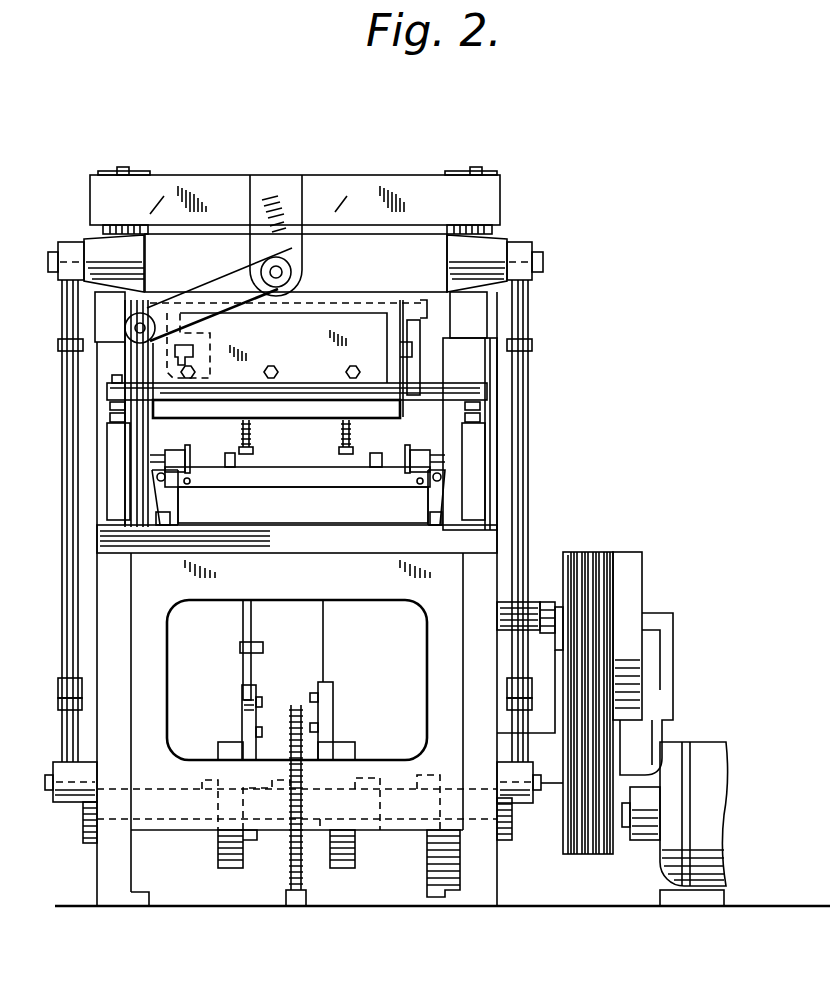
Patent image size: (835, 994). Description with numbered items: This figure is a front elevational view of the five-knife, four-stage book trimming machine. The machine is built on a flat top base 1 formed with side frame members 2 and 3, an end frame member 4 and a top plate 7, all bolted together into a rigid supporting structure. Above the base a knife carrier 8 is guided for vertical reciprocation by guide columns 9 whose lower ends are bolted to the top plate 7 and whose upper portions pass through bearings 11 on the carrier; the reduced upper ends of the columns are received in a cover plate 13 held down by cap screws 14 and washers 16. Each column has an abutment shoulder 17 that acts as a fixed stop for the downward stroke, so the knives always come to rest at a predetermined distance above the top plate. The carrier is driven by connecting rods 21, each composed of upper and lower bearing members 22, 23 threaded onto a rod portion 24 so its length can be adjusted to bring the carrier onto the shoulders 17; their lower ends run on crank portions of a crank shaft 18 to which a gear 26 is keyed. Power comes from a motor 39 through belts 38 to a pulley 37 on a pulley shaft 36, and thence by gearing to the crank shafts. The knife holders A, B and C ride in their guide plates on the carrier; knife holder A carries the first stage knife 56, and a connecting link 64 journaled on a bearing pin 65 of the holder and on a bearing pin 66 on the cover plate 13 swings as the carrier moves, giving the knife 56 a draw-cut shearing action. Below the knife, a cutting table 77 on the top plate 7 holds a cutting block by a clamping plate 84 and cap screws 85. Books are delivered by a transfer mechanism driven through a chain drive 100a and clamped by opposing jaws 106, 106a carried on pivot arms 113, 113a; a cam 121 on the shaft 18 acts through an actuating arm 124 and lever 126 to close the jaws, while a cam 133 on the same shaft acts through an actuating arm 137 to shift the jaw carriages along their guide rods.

The flat top base 1 is at (92, 862).
The side frame member 2 is at (497, 878).
The side frame member 3 is at (97, 882).
The end frame member 4 is at (277, 160).
The top plate 7 is at (487, 546).
The knife carrier 8 is at (407, 254).
The guide columns 9 is at (107, 299).
The bearings 11 is at (75, 238).
The cover plate 13 is at (345, 174).
The cap screws 14 is at (122, 167).
The washers 16 is at (146, 171).
The abutment shoulder 17 is at (95, 332).
The crank shaft 18 is at (172, 790).
The connecting rods 21 is at (72, 555).
The upper bearing member 22 is at (70, 244).
The lower bearing member 23 is at (64, 802).
The rod portion 24 is at (70, 586).
The gear 26 is at (427, 850).
The pulley shaft 36 is at (553, 614).
The pulley 37 is at (636, 552).
The belts 38 is at (655, 760).
The motor 39 is at (722, 744).
The knife 56 is at (285, 420).
The connecting link 64 is at (222, 282).
The bearing pin 65 is at (142, 326).
The bearing pin 66 is at (286, 266).
The cutting table 77 is at (288, 513).
The clamping plate 84 is at (284, 472).
The cap screws 85 is at (290, 481).
The chain drive 100a is at (292, 882).
The jaw 106 is at (408, 454).
The jaw 106a is at (186, 456).
The pivot arms 113 is at (430, 494).
The pivot arms 113a is at (170, 494).
The cam 121 is at (222, 860).
The actuating arm 124 is at (243, 712).
The lever 126 is at (252, 620).
The cam 133 is at (343, 868).
The actuating arm 137 is at (333, 702).
The first stage knife holder A is at (300, 337).
The knife holder B is at (425, 358).
The knife holder C is at (199, 345).